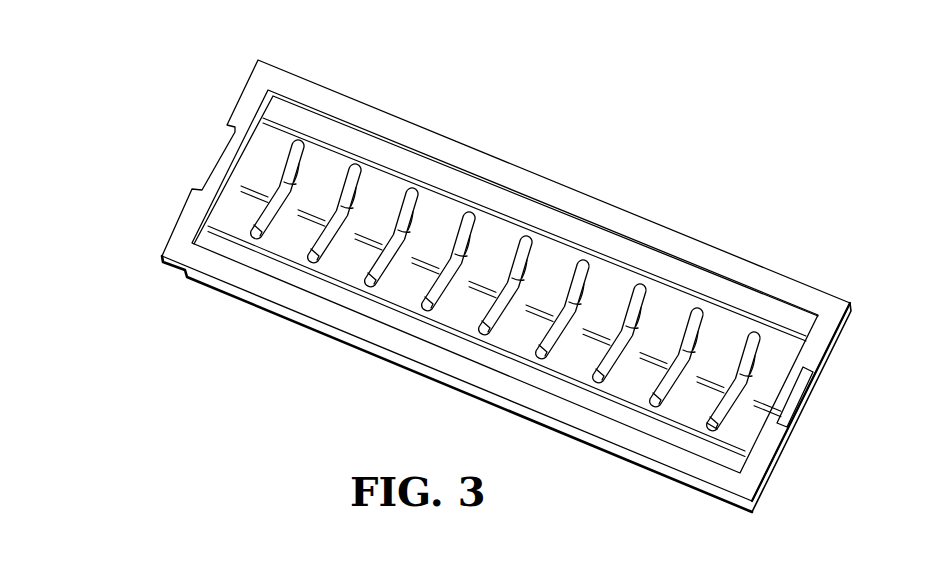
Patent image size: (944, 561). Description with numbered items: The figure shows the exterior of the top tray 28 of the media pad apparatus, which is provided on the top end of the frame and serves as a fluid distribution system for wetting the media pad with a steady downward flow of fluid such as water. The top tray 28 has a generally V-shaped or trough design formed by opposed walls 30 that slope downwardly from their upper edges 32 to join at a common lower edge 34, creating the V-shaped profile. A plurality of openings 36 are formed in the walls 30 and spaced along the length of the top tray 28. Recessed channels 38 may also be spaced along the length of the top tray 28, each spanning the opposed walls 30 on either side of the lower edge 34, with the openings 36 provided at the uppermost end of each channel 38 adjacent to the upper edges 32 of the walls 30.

The top tray 28 is at (118, 281).
The opposed walls 30 is at (239, 215).
The upper edges 32 is at (383, 167).
The lower edge 34 is at (538, 310).
The openings 36 is at (712, 413).
The recessed channels 38 is at (743, 383).